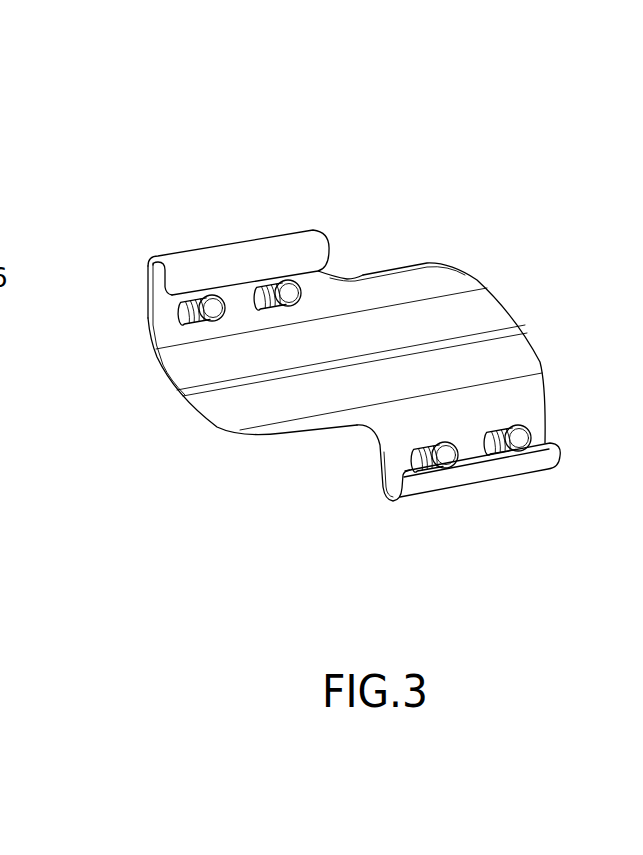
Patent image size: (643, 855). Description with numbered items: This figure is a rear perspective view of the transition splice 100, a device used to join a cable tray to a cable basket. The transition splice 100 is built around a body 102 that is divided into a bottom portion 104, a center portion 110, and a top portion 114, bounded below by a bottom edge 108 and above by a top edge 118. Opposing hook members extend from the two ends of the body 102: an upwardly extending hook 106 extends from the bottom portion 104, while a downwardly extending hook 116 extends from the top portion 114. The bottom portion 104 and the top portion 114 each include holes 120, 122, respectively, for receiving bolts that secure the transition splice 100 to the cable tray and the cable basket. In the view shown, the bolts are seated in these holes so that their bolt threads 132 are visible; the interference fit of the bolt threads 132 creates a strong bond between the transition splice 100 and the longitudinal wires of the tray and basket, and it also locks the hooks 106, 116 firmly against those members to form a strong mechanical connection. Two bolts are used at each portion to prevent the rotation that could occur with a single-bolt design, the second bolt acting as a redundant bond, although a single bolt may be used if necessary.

The transition splice 100 is at (433, 113).
The body 102 is at (537, 345).
The bottom portion 104 is at (460, 493).
The upwardly extending hook 106 is at (492, 463).
The bottom edge 108 is at (340, 427).
The center portion 110 is at (492, 322).
The top portion 114 is at (225, 247).
The downwardly extending hook 116 is at (290, 262).
The top edge 118 is at (351, 277).
The holes 120 is at (410, 447).
The holes 122 is at (180, 308).
The bolt threads 132 is at (532, 422).